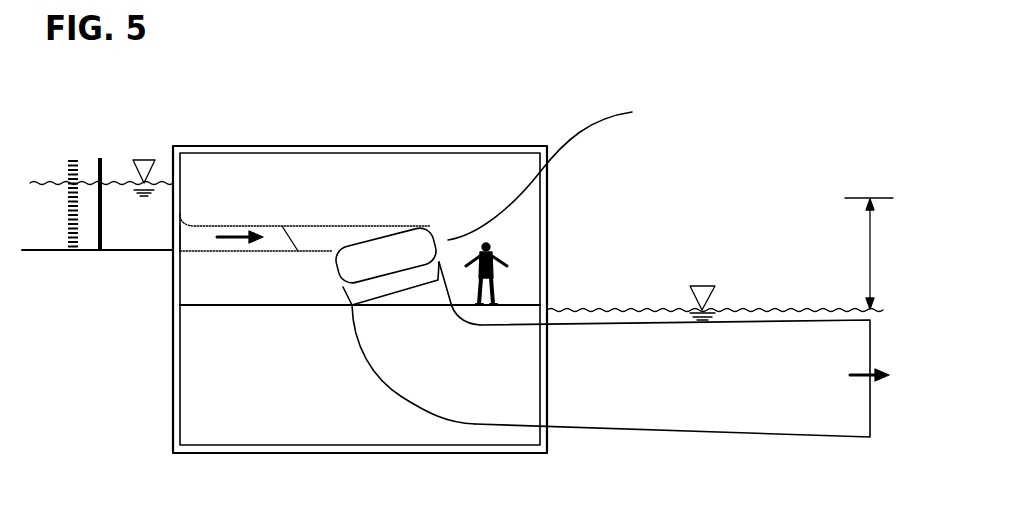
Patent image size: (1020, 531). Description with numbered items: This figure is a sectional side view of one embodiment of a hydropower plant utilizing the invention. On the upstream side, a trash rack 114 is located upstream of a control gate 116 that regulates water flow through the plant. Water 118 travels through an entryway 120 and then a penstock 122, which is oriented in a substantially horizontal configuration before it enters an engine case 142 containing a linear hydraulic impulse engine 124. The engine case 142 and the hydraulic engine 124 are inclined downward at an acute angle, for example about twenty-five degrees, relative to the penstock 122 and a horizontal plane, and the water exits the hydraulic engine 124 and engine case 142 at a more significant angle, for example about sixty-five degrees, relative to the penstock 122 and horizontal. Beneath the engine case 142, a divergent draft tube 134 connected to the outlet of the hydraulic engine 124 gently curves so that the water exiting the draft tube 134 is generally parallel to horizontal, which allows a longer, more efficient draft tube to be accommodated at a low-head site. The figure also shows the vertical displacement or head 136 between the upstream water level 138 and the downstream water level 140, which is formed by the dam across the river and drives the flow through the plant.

The trash rack 114 is at (79, 223).
The control gate 116 is at (100, 157).
The water 118 is at (230, 243).
The entryway 120 is at (190, 217).
The penstock 122 is at (318, 217).
The linear hydraulic impulse engine 124 is at (445, 214).
The divergent draft tube 134 is at (682, 378).
The head 136 is at (855, 253).
The upstream water level 138 is at (142, 161).
The downstream water level 140 is at (715, 287).
The engine case 142 is at (564, 168).